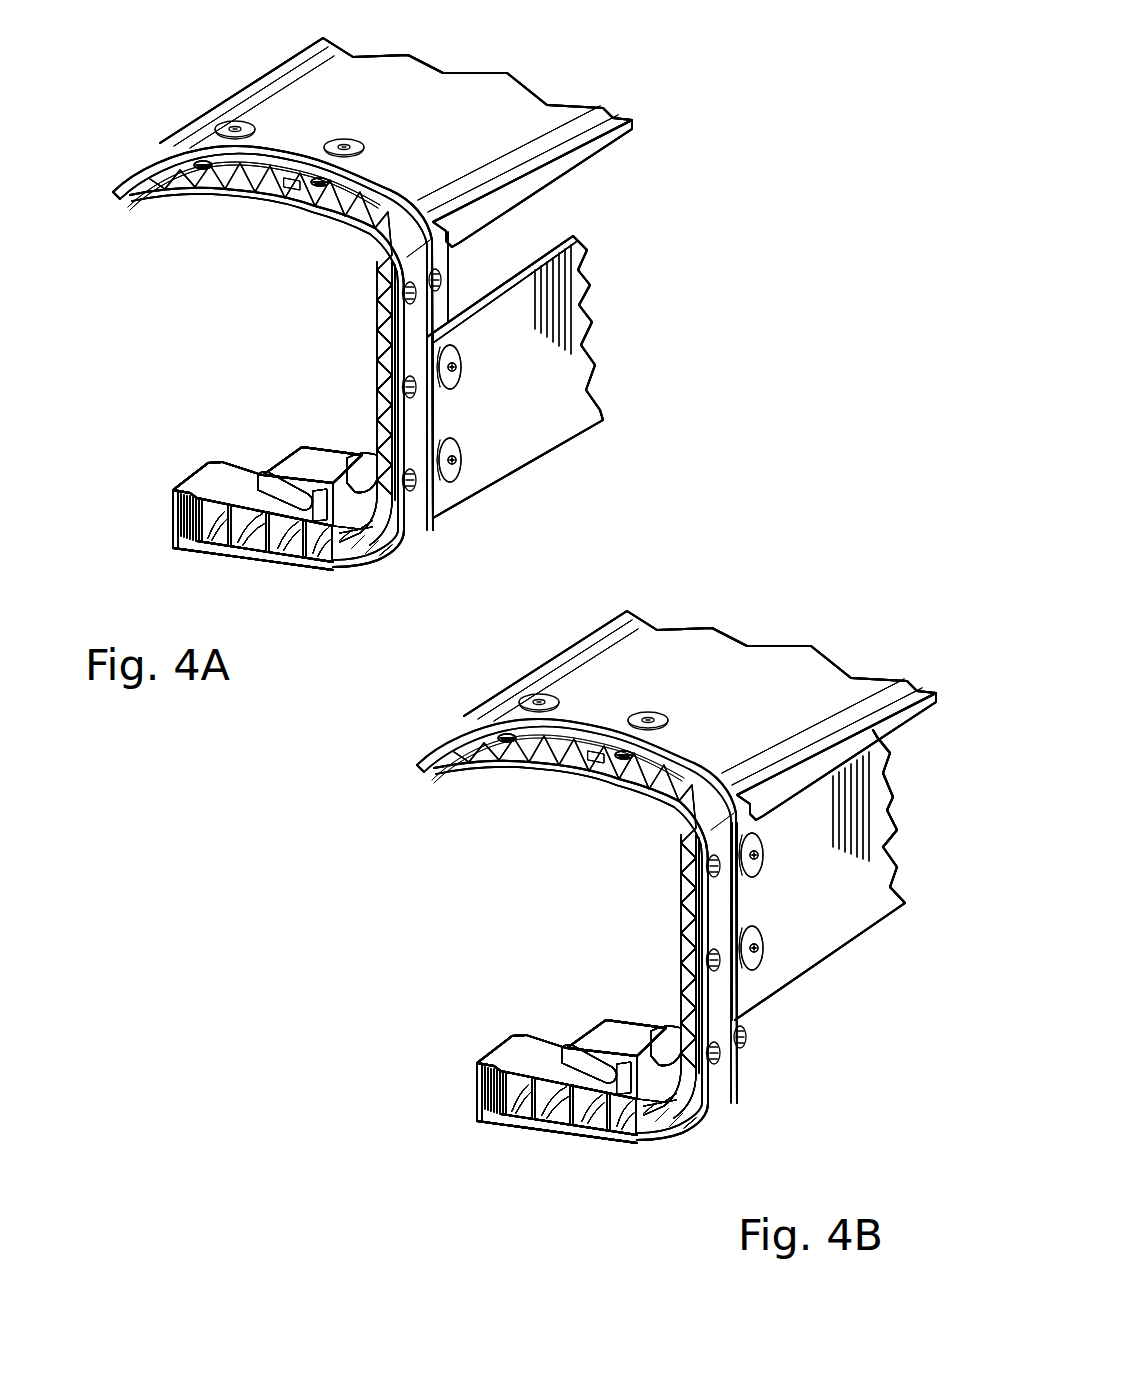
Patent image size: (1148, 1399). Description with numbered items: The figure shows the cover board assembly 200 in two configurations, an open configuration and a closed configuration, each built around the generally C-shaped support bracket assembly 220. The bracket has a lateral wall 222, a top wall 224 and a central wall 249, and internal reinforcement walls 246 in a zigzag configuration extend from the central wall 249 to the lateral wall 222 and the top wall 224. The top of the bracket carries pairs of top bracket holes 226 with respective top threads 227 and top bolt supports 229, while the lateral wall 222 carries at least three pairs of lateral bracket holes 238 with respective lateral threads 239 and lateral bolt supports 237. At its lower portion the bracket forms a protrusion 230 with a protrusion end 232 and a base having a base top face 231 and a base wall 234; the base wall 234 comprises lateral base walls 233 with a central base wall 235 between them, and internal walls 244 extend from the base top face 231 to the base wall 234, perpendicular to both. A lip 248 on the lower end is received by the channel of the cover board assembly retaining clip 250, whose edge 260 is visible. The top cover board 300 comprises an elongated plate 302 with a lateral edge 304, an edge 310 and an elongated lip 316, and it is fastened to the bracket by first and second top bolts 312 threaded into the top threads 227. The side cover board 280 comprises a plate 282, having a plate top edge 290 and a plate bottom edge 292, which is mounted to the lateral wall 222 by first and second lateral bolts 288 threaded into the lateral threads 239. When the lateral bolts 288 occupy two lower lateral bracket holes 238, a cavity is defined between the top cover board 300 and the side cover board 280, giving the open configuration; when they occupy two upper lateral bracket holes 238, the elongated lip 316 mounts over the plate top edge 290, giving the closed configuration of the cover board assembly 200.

In FIG. 4A, the cover board assembly 200 is at (716, 200).
In FIG. 4B, the cover board assembly 200 is at (671, 981).
In FIG. 4A, the support bracket assembly 220 is at (360, 282).
In FIG. 4B, the support bracket assembly 220 is at (671, 981).
In FIG. 4A, the lateral wall 222 is at (450, 305).
In FIG. 4A, the top wall 224 is at (247, 170).
In FIG. 4B, the top wall 224 is at (577, 911).
In FIG. 4A, the top bracket holes 226 is at (190, 172).
In FIG. 4B, the top bracket holes 226 is at (571, 937).
In FIG. 4A, the top threads 227 is at (207, 178).
In FIG. 4B, the top threads 227 is at (571, 937).
In FIG. 4A, the top bolt supports 229 is at (200, 180).
In FIG. 4B, the top bolt supports 229 is at (571, 937).
In FIG. 4A, the protrusion 230 is at (320, 460).
In FIG. 4B, the protrusion 230 is at (579, 1081).
In FIG. 4A, the base top face 231 is at (243, 475).
In FIG. 4B, the base top face 231 is at (579, 1081).
In FIG. 4A, the protrusion end 232 is at (287, 483).
In FIG. 4B, the protrusion end 232 is at (579, 1081).
In FIG. 4A, the lateral base walls 233 is at (253, 540).
In FIG. 4B, the lateral base walls 233 is at (579, 1081).
In FIG. 4A, the base wall 234 is at (283, 570).
In FIG. 4B, the base wall 234 is at (579, 1081).
In FIG. 4A, the central base wall 235 is at (293, 537).
In FIG. 4B, the central base wall 235 is at (579, 1081).
In FIG. 4A, the lateral bolt supports 237 is at (393, 387).
In FIG. 4B, the lateral bolt supports 237 is at (671, 981).
In FIG. 4A, the lateral bracket holes 238 is at (410, 290).
In FIG. 4B, the lateral bracket holes 238 is at (727, 959).
In FIG. 4A, the lateral threads 239 is at (408, 375).
In FIG. 4B, the lateral threads 239 is at (671, 981).
In FIG. 4A, the internal walls 244 is at (310, 545).
In FIG. 4B, the internal walls 244 is at (579, 1081).
In FIG. 4A, the internal reinforcement walls 246 is at (392, 285).
In FIG. 4B, the internal reinforcement walls 246 is at (671, 981).
In FIG. 4A, the lip 248 is at (185, 548).
In FIG. 4B, the lip 248 is at (579, 1081).
In FIG. 4A, the central wall 249 is at (378, 300).
In FIG. 4B, the central wall 249 is at (671, 981).
In FIG. 4A, the cover board assembly retaining clip 250 is at (165, 466).
In FIG. 4B, the cover board assembly retaining clip 250 is at (579, 1081).
In FIG. 4A, the edge 260 is at (177, 543).
In FIG. 4B, the edge 260 is at (579, 1081).
In FIG. 4A, the side cover board 280 is at (628, 333).
In FIG. 4B, the side cover board 280 is at (818, 875).
In FIG. 4A, the plate 282 is at (585, 300).
In FIG. 4B, the plate 282 is at (818, 875).
In FIG. 4A, the first and second lateral bolts 288 is at (458, 452).
In FIG. 4B, the first and second lateral bolts 288 is at (751, 901).
In FIG. 4A, the plate top edge 290 is at (555, 235).
In FIG. 4B, the plate top edge 290 is at (818, 875).
In FIG. 4A, the plate bottom edge 292 is at (513, 483).
In FIG. 4B, the plate bottom edge 292 is at (818, 875).
In FIG. 4A, the top cover board 300 is at (538, 85).
In FIG. 4B, the top cover board 300 is at (700, 715).
In FIG. 4A, the elongated plate 302 is at (393, 90).
In FIG. 4B, the elongated plate 302 is at (700, 715).
In FIG. 4A, the lateral edge 304 is at (628, 118).
In FIG. 4B, the lateral edge 304 is at (700, 715).
In FIG. 4A, the edge 310 is at (170, 165).
In FIG. 4B, the edge 310 is at (577, 911).
In FIG. 4A, the first and second top bolts 312 is at (340, 140).
In FIG. 4B, the first and second top bolts 312 is at (593, 712).
In FIG. 4A, the elongated lip 316 is at (573, 177).
In FIG. 4B, the elongated lip 316 is at (700, 715).